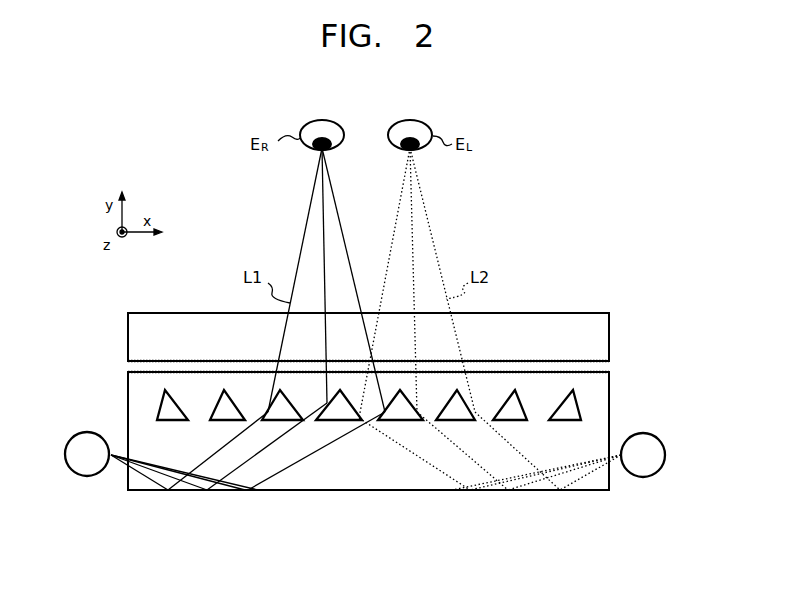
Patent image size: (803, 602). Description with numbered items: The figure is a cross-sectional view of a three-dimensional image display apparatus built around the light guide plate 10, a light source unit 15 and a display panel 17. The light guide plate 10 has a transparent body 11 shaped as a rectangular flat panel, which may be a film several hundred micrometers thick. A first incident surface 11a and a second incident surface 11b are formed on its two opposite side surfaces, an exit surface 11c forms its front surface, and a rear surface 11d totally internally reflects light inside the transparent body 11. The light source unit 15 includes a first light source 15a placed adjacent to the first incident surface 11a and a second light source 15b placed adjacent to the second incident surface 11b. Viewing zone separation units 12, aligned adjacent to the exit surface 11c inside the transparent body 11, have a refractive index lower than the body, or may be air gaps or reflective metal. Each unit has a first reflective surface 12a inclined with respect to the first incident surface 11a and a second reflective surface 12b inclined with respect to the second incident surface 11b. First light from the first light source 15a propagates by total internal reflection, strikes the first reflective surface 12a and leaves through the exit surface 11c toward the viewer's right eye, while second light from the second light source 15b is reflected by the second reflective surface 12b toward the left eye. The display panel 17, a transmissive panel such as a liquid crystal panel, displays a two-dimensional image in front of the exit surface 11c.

The light guide plate 10 is at (385, 414).
The transparent body 11 is at (364, 414).
The first incident surface 11a is at (124, 402).
The second incident surface 11b is at (609, 430).
The exit surface 11c is at (172, 372).
The rear surface 11d is at (429, 490).
The viewing zone separation units 12 is at (375, 351).
The first reflective surface 12a is at (149, 410).
The second reflective surface 12b is at (522, 398).
The light source unit 15 is at (384, 482).
The first light source 15a is at (73, 475).
The second light source 15b is at (668, 455).
The display panel 17 is at (609, 335).